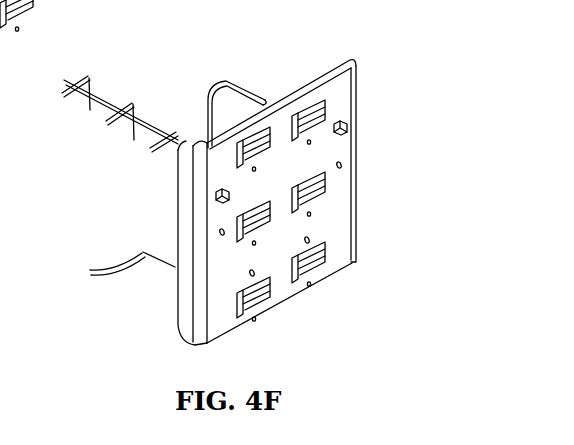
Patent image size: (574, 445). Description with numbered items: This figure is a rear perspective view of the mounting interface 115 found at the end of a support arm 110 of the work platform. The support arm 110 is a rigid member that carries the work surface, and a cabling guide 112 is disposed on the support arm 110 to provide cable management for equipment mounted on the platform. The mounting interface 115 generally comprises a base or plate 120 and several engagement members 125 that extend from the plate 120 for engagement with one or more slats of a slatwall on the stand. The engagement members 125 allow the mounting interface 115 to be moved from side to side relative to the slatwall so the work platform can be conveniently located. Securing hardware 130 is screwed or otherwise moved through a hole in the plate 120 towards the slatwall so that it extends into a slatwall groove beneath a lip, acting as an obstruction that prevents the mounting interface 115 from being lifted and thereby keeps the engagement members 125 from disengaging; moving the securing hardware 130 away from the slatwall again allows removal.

The support arm 110 is at (136, 203).
The cabling guide 112 is at (128, 103).
The mounting interface 115 is at (296, 322).
The plate 120 is at (340, 89).
The engagement member 125 is at (317, 263).
The securing hardware 130 is at (347, 127).